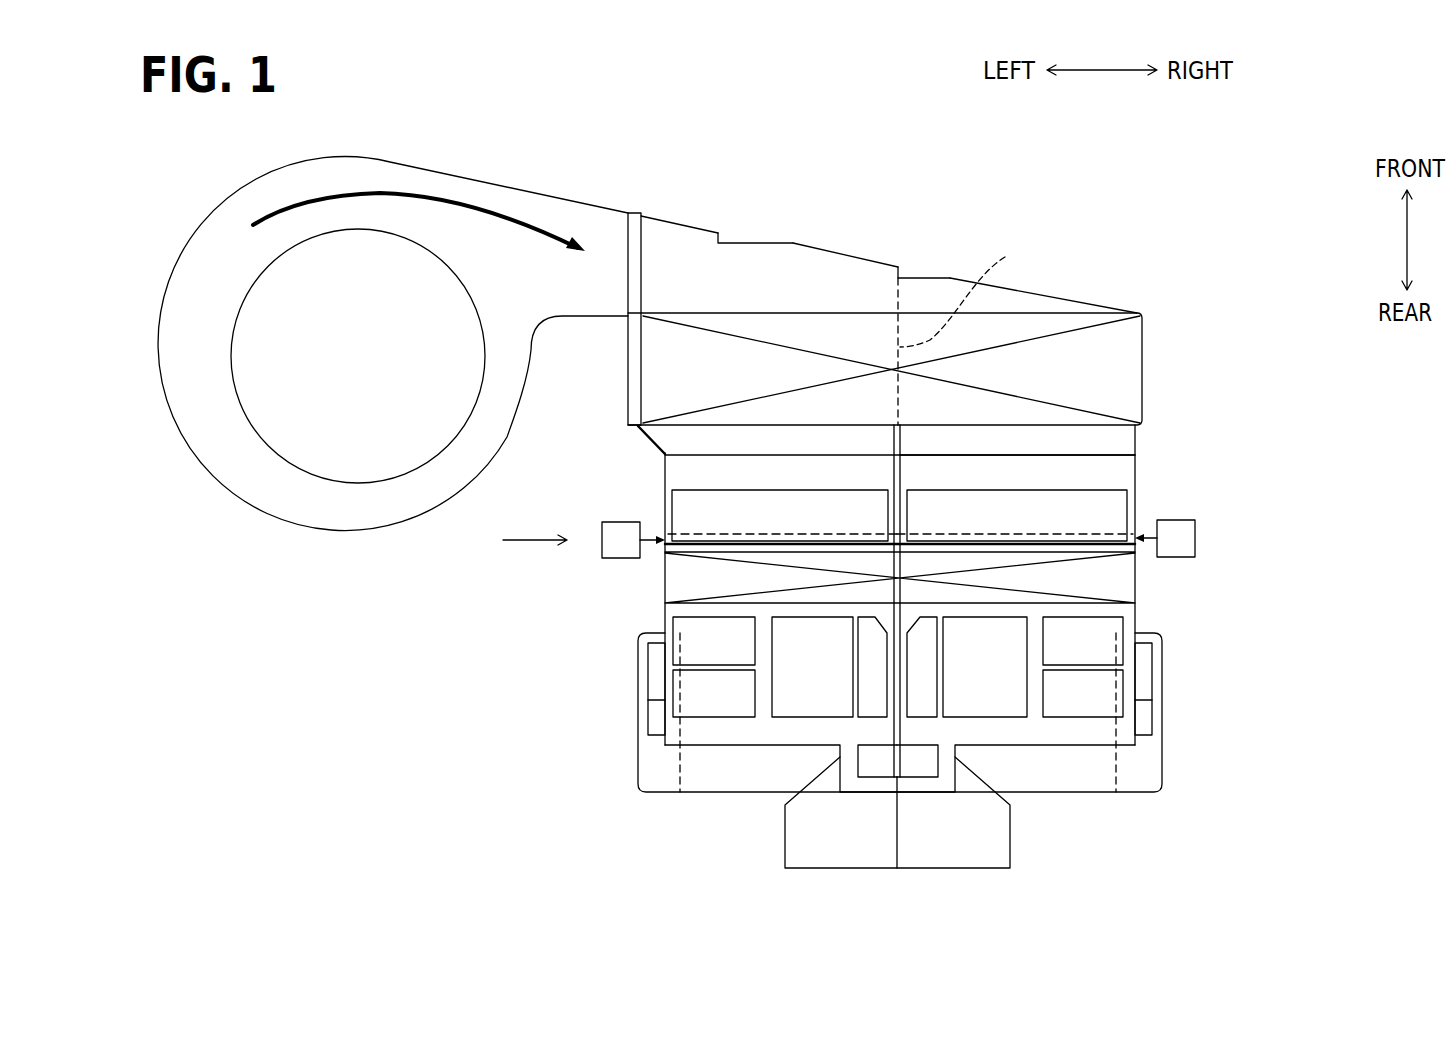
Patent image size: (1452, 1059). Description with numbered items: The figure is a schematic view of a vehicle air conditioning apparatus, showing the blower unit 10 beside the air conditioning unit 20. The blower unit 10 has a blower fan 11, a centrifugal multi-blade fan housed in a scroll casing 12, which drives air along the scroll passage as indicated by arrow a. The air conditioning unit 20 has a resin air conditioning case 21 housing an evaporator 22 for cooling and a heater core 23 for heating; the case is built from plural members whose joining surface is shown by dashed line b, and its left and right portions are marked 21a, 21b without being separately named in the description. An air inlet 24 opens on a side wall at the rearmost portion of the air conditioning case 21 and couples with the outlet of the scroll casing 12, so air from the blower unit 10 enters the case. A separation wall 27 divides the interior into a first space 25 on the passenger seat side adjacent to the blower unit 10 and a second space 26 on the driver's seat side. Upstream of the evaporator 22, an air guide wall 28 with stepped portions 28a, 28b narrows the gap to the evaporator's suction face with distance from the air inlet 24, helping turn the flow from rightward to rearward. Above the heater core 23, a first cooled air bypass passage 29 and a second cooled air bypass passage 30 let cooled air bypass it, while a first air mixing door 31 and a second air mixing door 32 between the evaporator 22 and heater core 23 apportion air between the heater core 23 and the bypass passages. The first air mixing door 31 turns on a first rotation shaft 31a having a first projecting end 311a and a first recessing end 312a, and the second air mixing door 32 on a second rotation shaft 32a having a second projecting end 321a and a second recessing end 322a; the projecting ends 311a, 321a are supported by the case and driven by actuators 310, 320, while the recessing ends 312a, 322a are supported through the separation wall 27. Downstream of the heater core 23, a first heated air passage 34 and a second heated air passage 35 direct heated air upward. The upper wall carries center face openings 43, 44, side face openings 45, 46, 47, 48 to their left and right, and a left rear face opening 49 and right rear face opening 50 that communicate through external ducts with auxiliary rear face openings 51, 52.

The blower unit 10 is at (434, 155).
The blower fan 11 is at (245, 411).
The scroll casing 12 is at (166, 400).
The air conditioning unit 20 is at (1108, 280).
The air conditioning case 21 is at (1135, 440).
The left side wall 21a is at (665, 498).
The right side wall 21b is at (1137, 483).
The evaporator 22 is at (1090, 347).
The heater core 23 is at (1113, 578).
The air inlet 24 is at (645, 257).
The first space 25 is at (752, 463).
The second space 26 is at (1063, 467).
The separation wall 27 is at (817, 510).
The air guide wall 28 is at (842, 240).
The stepped portion 28a is at (720, 233).
The stepped portion 28b is at (900, 272).
The first cooled air bypass passage 29 is at (752, 480).
The second cooled air bypass passage 30 is at (1060, 480).
The first air mixing door 31 is at (890, 472).
The first rotation shaft 31a is at (725, 535).
The second air mixing door 32 is at (973, 533).
The second rotation shaft 32a is at (1010, 505).
The first heated air passage 34 is at (763, 612).
The second heated air passage 35 is at (1033, 612).
The center face opening 43 is at (813, 680).
The center face opening 44 is at (1007, 687).
The side face opening 45 is at (705, 638).
The side face opening 46 is at (722, 700).
The side face opening 47 is at (1100, 645).
The side face opening 48 is at (1100, 686).
The left rear face opening 49 is at (877, 687).
The right rear face opening 50 is at (925, 692).
The auxiliary rear face opening 51 is at (877, 767).
The auxiliary rear face opening 52 is at (922, 762).
The actuator 310 is at (615, 522).
The first projecting end 311a is at (700, 562).
The first recessing end 312a is at (890, 543).
The actuator 320 is at (1195, 535).
The second projecting end 321a is at (1135, 520).
The second recessing end 322a is at (1095, 562).